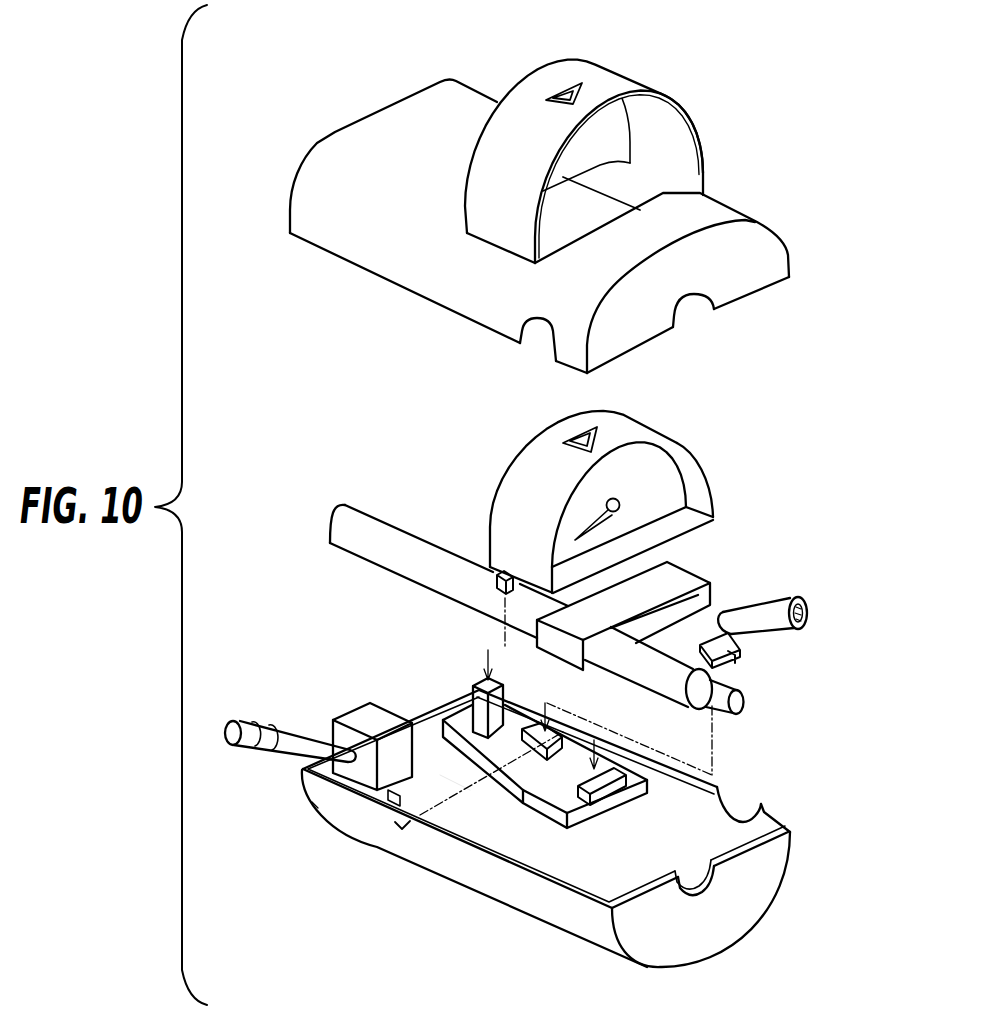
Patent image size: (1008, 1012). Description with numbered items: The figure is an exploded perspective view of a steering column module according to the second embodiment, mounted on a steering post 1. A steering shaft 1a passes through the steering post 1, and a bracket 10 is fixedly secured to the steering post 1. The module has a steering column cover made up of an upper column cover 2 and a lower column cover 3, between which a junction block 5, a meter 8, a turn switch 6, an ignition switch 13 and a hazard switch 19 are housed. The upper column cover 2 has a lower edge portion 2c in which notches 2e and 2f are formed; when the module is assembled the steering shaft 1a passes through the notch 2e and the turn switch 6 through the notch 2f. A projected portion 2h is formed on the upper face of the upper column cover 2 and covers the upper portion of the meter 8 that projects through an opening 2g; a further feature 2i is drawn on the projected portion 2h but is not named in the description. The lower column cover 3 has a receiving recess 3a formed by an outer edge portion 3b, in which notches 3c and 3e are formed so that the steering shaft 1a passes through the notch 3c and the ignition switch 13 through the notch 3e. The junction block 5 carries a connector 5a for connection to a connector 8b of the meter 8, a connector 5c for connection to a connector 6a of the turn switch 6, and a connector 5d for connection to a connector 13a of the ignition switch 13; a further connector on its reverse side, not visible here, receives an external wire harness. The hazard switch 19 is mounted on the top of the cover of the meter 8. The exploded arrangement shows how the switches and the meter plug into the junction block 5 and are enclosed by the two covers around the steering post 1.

The steering post 1 is at (373, 563).
The steering shaft 1a is at (738, 703).
The upper column cover 2 is at (730, 203).
The lower edge portion 2c is at (760, 293).
The notch 2e is at (700, 312).
The notch 2f is at (540, 340).
The opening 2g is at (593, 203).
The projected portion 2h is at (640, 82).
The cover indicator mark 2i is at (563, 88).
The lower column cover 3 is at (470, 890).
The receiving recess 3a is at (467, 817).
The outer edge portion 3b is at (745, 852).
The notch 3c is at (717, 873).
The notch 3e is at (727, 792).
The junction block 5 is at (540, 814).
The connector 5a is at (473, 712).
The connector 5c is at (605, 803).
The connector 5d is at (420, 825).
The turn switch 6 is at (250, 720).
The connector 6a is at (316, 803).
The meter 8 is at (520, 478).
The connector 8b is at (490, 583).
The bracket 10 is at (690, 570).
The ignition switch 13 is at (773, 602).
The connector 13a is at (742, 658).
The hazard switch 19 is at (603, 414).